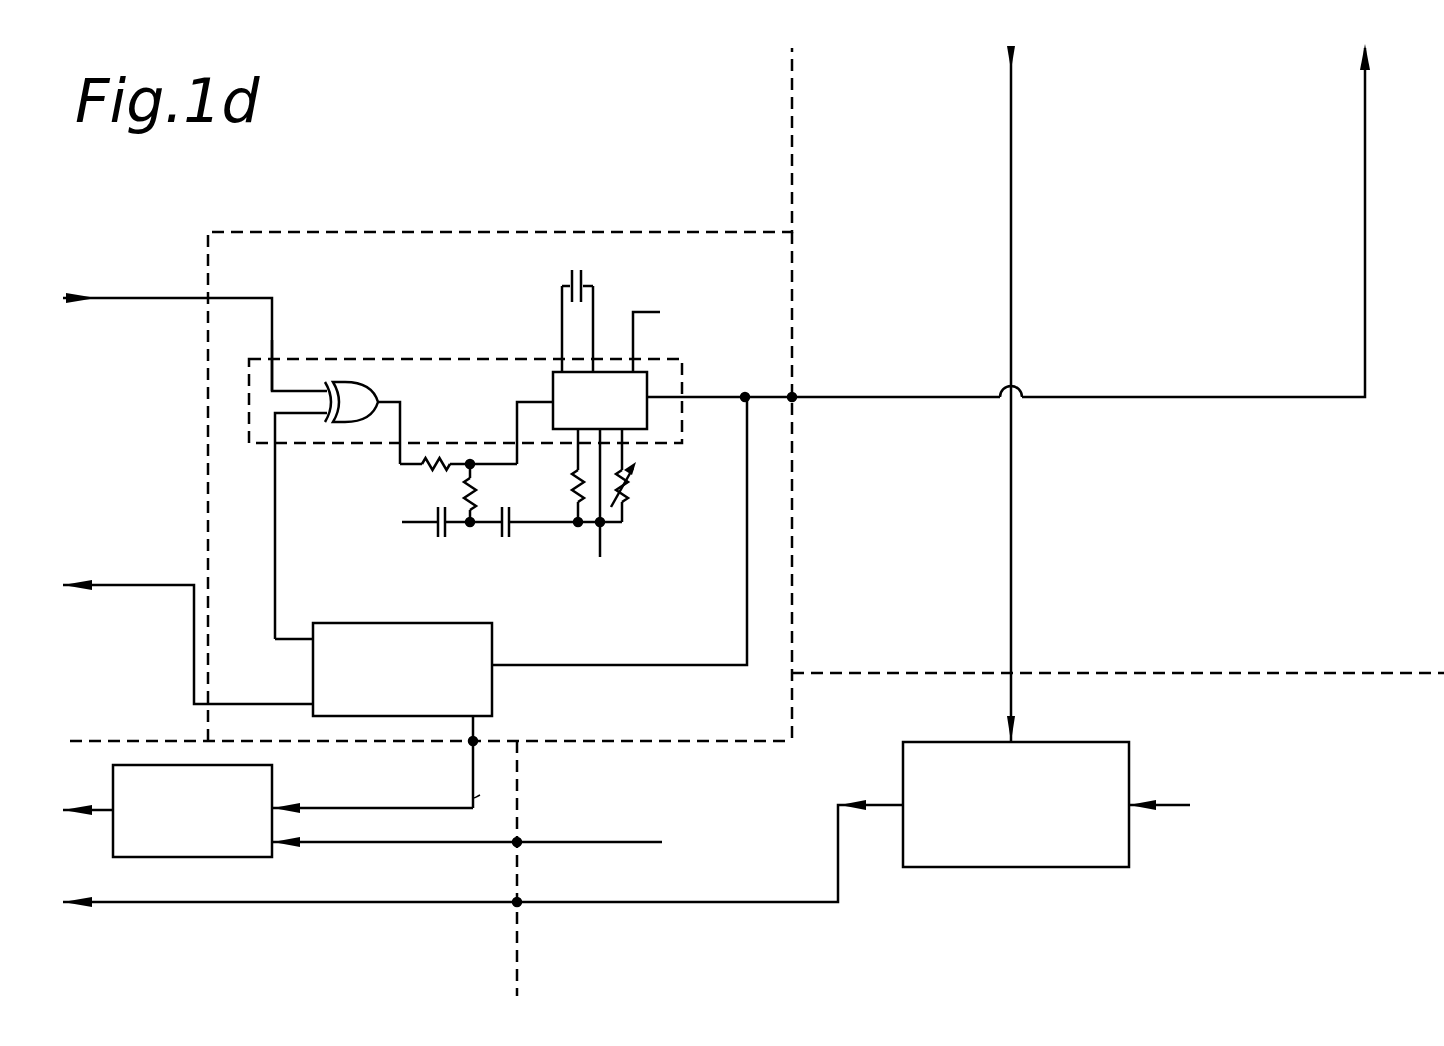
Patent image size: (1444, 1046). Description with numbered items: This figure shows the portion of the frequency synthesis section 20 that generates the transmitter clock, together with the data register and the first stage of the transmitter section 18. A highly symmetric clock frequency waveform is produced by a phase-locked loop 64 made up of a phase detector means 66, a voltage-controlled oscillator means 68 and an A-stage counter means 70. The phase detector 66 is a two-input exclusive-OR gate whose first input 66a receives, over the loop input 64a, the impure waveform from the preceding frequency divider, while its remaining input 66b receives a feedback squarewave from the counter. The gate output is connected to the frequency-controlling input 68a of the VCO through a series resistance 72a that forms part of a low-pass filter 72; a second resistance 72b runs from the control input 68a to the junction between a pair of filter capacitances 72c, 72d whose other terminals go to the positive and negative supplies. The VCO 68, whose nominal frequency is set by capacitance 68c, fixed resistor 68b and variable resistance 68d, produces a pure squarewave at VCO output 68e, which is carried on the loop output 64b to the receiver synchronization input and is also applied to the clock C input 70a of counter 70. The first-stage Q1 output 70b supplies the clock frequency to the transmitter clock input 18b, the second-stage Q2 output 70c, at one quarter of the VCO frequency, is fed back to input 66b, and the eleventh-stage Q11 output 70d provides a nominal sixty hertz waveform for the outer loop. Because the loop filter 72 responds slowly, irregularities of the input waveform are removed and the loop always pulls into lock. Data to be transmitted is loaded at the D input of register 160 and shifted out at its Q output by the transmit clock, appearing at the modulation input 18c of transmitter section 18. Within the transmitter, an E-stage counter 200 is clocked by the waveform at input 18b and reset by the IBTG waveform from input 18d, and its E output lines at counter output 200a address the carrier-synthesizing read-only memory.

The transmitter section 18 is at (132, 922).
The transmitter clock input 18b is at (470, 746).
The modulation input 18c is at (518, 900).
The transmitter section input for IBTG waveform 18d is at (518, 840).
The frequency synthesis section 20 is at (668, 144).
The phase-locked loop 64 is at (247, 739).
The phase-locked loop input 64a is at (208, 297).
The phase-locked loop output 64b is at (796, 398).
The phase detector means 66 is at (368, 396).
The first input of phase detector 66a is at (272, 359).
The remaining input of phase detector 66b is at (272, 446).
The voltage-controlled oscillator means 68 is at (553, 386).
The frequency-controlling input of the VCO 68a is at (550, 408).
The fixed resistor 68b is at (575, 484).
The nominal-operating-frequency-determining capacitance 68c is at (592, 287).
The frequency-adjusting variable resistance 68d is at (630, 488).
The VCO output 68e is at (682, 399).
The A-stage counter means 70 is at (492, 624).
The clock C input of counter 70a is at (492, 662).
The Q1 output of counter 70b is at (476, 718).
The Q2 output of counter 70c is at (312, 636).
The third output of counter (Q11) 70d is at (312, 703).
The low-pass filter 72 is at (368, 509).
The series resistance 72a is at (428, 468).
The second resistance 72b is at (474, 498).
The filter capacitance 72c is at (436, 530).
The filter capacitance 72d is at (500, 530).
The register 160 is at (1110, 742).
The E-stage counter 200 is at (200, 858).
The counter output 200a is at (113, 816).